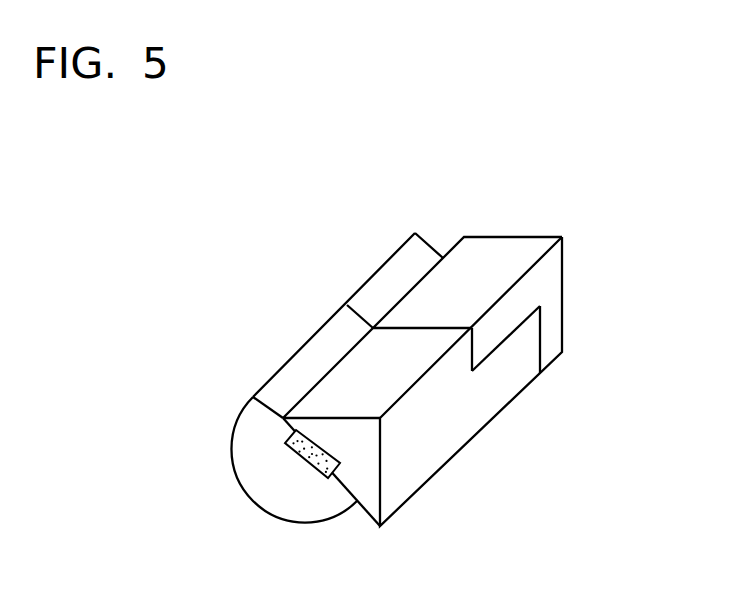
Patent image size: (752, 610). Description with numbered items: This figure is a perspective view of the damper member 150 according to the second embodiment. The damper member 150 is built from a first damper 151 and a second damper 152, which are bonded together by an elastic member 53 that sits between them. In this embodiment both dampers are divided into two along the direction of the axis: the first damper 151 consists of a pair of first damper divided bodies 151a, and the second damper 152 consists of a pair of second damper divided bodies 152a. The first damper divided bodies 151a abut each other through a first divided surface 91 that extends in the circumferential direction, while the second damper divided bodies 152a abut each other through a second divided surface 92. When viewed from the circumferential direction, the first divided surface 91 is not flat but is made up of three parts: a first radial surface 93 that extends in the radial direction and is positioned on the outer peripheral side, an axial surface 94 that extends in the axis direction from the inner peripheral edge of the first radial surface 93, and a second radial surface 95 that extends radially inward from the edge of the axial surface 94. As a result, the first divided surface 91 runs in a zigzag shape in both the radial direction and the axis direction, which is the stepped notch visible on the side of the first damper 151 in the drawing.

The damper member 150 is at (242, 233).
The first damper 151 is at (472, 366).
The first damper divided bodies 151a is at (555, 279).
The second damper 152 is at (305, 398).
The second damper divided bodies 152a is at (315, 305).
The second divided surface 92 is at (360, 310).
The first divided surface 91 is at (545, 306).
The first radial surface 93 is at (477, 343).
The axial surface 94 is at (521, 323).
The second radial surface 95 is at (541, 346).
The elastic member 53 is at (303, 462).